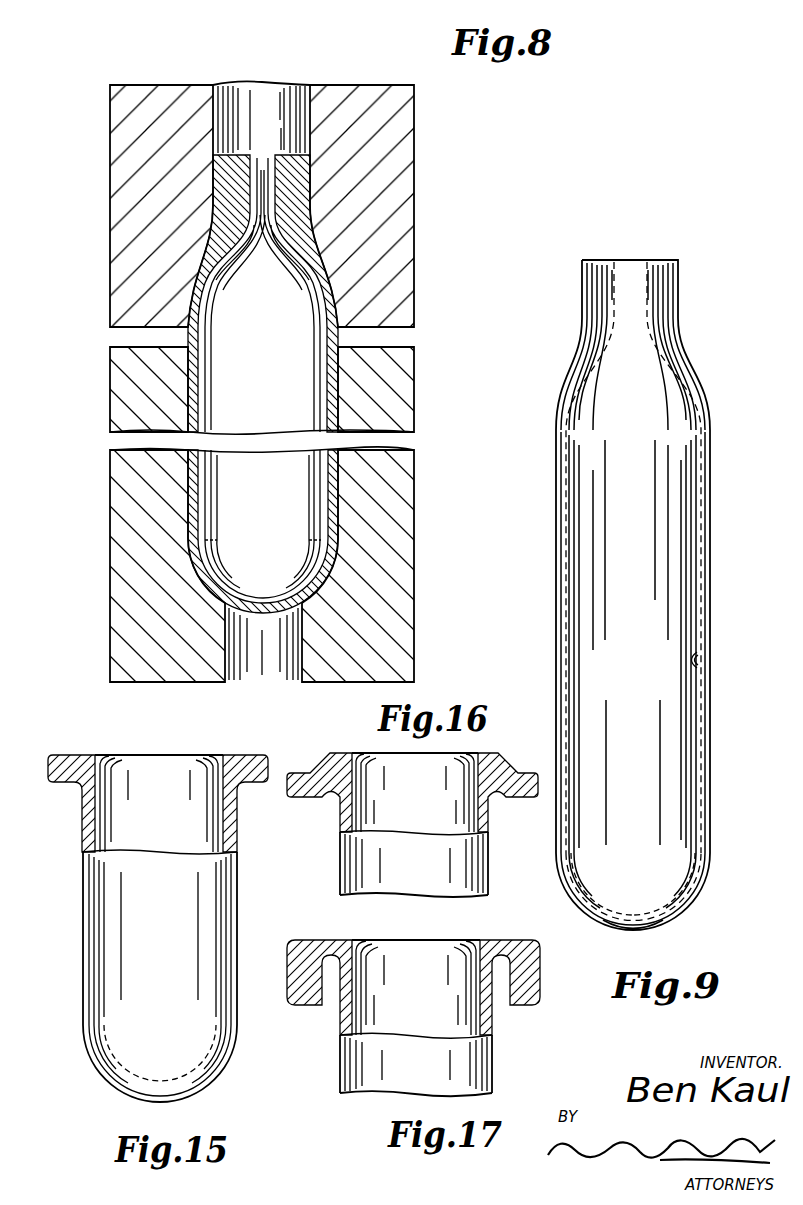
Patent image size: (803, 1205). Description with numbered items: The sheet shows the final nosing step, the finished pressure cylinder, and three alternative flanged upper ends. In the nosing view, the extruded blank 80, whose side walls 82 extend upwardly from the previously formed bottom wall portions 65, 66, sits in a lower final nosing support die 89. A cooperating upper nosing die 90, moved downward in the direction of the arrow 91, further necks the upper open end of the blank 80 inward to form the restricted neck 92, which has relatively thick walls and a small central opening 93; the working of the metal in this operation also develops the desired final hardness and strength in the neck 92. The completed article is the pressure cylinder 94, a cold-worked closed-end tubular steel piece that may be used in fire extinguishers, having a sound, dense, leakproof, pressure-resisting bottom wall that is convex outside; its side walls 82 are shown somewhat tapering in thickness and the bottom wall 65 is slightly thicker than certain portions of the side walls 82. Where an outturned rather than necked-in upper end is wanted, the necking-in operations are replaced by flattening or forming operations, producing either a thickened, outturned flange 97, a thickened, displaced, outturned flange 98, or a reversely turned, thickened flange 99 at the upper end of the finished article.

In FIG. 9, the bottom wall 65 is at (658, 928).
In FIG. 9, the bottom wall portion 66 is at (710, 870).
In FIG. 8, the extruded blank 80 is at (331, 397).
In FIG. 9, the side walls 82 is at (714, 660).
In FIG. 8, the lower final nosing support die 89 is at (402, 385).
In FIG. 8, the upper nosing die 90 is at (408, 163).
In FIG. 8, the arrow 91 is at (260, 33).
In FIG. 8, the restricted neck 92 is at (293, 203).
In FIG. 9, the restricted neck 92 is at (658, 300).
In FIG. 8, the central opening 93 is at (258, 183).
In FIG. 9, the central opening 93 is at (622, 288).
In FIG. 9, the pressure cylinder 94 is at (710, 603).
In FIG. 15, the thickened outturned flange 97 is at (52, 784).
In FIG. 16, the thickened displaced outturned flange 98 is at (518, 788).
In FIG. 17, the reversely turned thickened flange 99 is at (525, 990).